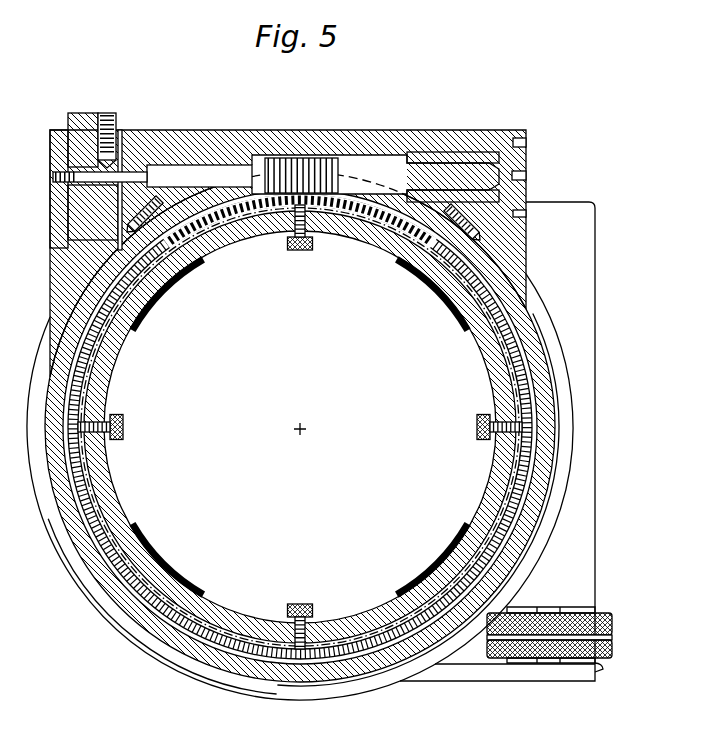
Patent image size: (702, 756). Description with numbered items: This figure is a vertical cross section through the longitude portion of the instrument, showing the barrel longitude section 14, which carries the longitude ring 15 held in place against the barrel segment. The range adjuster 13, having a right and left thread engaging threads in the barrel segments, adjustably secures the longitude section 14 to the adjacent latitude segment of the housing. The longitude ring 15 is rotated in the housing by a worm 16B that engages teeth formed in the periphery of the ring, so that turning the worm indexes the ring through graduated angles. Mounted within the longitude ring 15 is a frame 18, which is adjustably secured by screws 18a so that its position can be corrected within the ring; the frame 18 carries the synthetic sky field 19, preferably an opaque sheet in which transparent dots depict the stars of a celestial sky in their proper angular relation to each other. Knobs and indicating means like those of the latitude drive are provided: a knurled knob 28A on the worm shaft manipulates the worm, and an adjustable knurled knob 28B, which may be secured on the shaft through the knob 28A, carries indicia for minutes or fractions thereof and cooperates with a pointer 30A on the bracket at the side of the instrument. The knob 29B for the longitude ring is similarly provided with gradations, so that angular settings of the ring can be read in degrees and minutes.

The range adjuster 13 is at (87, 582).
The barrel longitude section 14 is at (544, 415).
The longitude ring 15 is at (516, 342).
The worm 16B is at (295, 158).
The frame 18 is at (478, 511).
The screws 18a is at (300, 250).
The synthetic sky field 19 is at (221, 627).
The knurled knob 28A is at (619, 612).
The adjustable knurled knob 28B is at (619, 641).
The knob 29B is at (80, 112).
The pointer 30A is at (598, 667).